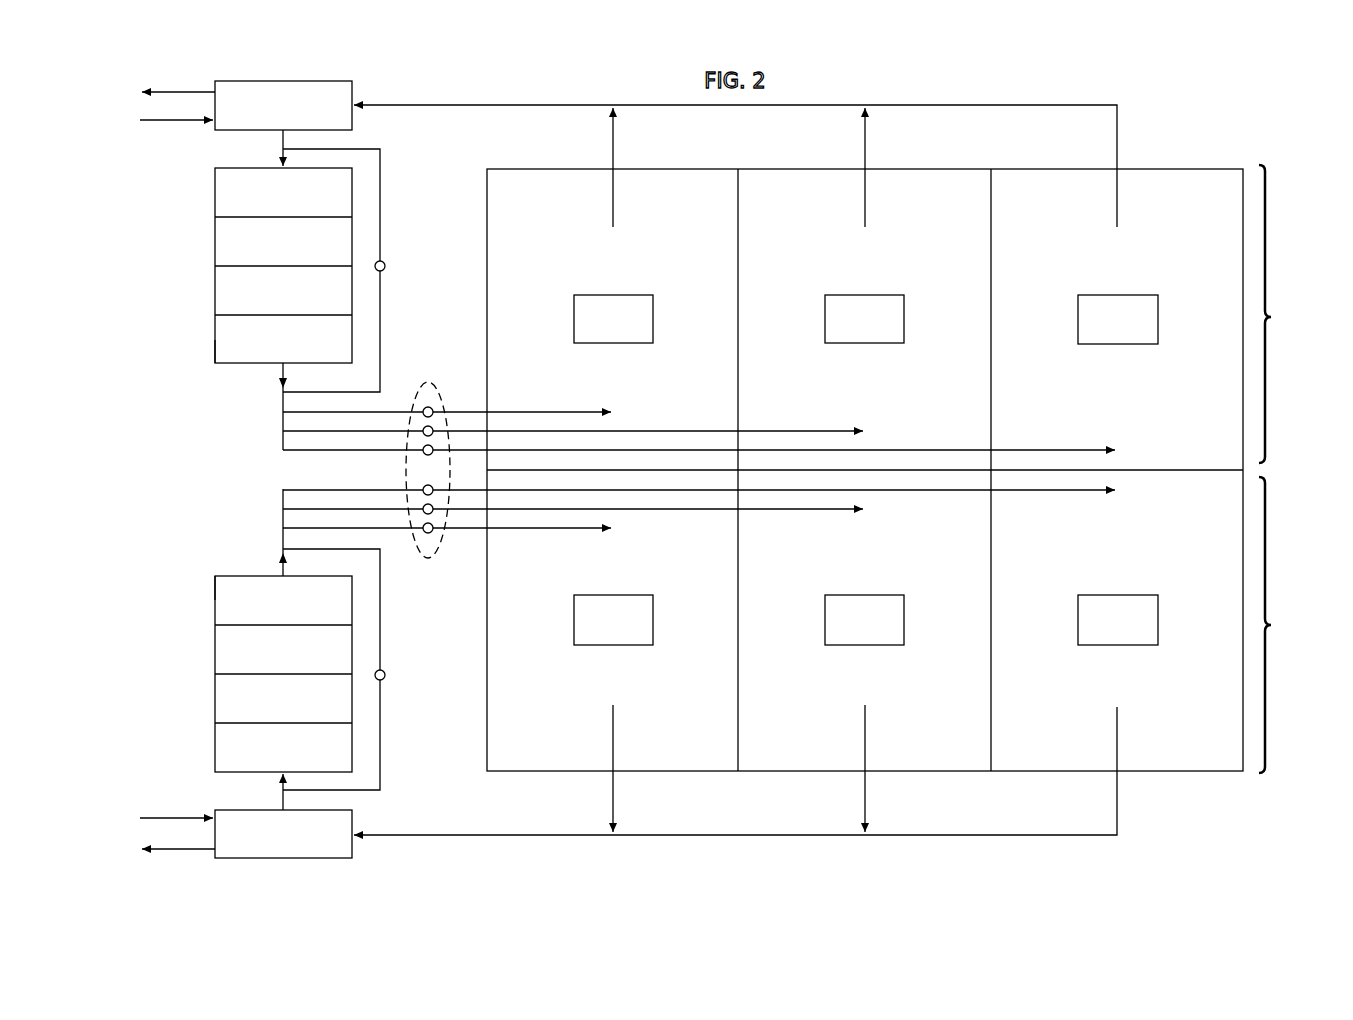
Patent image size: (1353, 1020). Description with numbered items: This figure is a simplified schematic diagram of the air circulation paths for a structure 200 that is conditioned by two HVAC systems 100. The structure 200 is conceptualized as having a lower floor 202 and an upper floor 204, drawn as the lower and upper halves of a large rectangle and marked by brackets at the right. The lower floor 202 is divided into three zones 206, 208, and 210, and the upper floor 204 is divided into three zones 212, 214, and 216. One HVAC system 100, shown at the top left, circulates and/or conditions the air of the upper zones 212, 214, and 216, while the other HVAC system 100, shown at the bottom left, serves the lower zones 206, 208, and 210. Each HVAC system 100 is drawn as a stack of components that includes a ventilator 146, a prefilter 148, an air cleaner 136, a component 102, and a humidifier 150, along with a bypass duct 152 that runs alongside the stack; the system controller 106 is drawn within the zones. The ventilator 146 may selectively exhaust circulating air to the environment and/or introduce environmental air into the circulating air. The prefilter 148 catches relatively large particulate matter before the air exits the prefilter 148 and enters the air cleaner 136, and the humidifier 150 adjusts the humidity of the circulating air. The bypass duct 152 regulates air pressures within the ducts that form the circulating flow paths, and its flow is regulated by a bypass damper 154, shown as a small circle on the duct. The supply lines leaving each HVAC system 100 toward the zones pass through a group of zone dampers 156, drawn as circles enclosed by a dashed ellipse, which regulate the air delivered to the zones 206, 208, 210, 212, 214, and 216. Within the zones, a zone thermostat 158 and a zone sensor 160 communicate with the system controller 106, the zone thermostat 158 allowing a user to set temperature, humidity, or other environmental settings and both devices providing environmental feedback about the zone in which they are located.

The HVAC system 100 is at (214, 394).
The processor 102 is at (222, 289).
The system controller 106 is at (613, 295).
The air cleaner 136 is at (222, 241).
The ventilator 146 is at (354, 126).
The prefilter 148 is at (222, 192).
The humidifier 150 is at (222, 337).
The bypass duct 152 is at (383, 208).
The bypass damper 154 is at (386, 266).
The zone dampers 156 is at (428, 382).
The zone thermostat 158 is at (868, 295).
The zone sensor 160 is at (1118, 295).
The structure 200 is at (1218, 165).
The lower floor 202 is at (1287, 625).
The upper floor 204 is at (1287, 314).
The zone 206 is at (573, 765).
The zone 208 is at (905, 765).
The zone 210 is at (1157, 765).
The zone 212 is at (573, 178).
The zone 214 is at (905, 178).
The zone 216 is at (1058, 178).